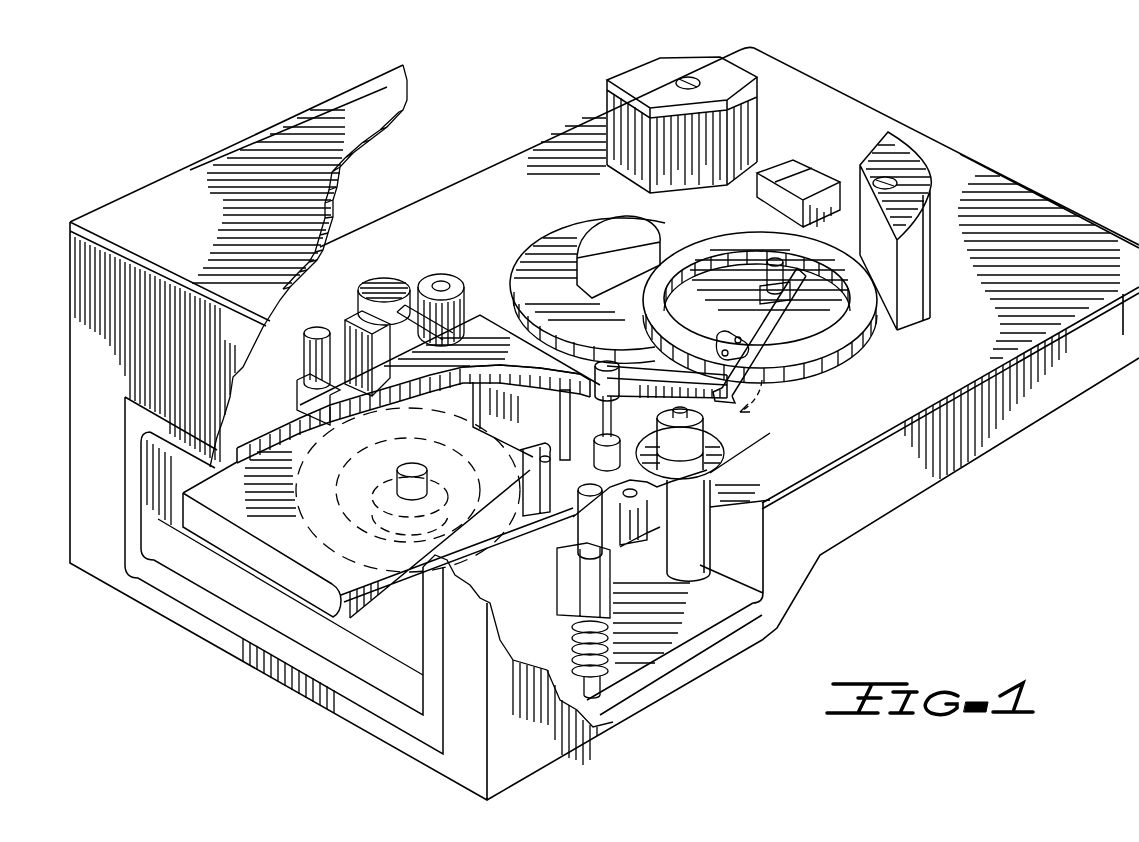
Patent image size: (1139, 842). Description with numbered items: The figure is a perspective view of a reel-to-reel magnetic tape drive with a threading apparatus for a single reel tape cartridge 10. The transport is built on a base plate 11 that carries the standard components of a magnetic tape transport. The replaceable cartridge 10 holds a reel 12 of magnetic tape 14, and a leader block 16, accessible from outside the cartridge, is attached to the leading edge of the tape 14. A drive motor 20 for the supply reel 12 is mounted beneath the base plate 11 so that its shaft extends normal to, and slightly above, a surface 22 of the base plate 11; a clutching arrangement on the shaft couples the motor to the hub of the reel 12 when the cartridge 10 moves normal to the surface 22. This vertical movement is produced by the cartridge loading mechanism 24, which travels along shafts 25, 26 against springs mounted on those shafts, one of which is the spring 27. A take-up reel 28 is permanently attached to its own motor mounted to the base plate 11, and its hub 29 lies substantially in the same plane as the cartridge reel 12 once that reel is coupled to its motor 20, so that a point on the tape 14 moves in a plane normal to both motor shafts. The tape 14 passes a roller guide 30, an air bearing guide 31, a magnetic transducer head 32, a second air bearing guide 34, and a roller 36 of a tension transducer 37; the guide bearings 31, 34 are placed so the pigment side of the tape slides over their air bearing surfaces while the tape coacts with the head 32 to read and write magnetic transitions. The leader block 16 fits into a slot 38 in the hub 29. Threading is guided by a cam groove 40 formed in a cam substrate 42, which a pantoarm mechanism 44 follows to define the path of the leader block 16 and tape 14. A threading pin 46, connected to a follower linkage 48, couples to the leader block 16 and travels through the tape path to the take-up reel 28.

The single reel tape cartridge 10 is at (317, 593).
The base plate 11 is at (902, 483).
The reel 12 is at (500, 476).
The magnetic tape 14 is at (538, 440).
The leader block 16 is at (556, 490).
The drive motor 20 is at (420, 612).
The surface 22 is at (977, 339).
The cartridge loading mechanism 24 is at (278, 435).
The shaft 25 is at (560, 527).
The shaft 26 is at (320, 328).
The spring 27 is at (608, 655).
The take-up reel 28 is at (535, 248).
The hub 29 is at (690, 246).
The roller guide 30 is at (715, 450).
The air bearing guide 31 is at (920, 182).
The magnetic transducer head 32 is at (802, 166).
The second air bearing guide 34 is at (627, 72).
The roller 36 is at (461, 282).
The tension transducer 37 is at (386, 284).
The slot 38 is at (612, 258).
The cam groove 40 is at (752, 250).
The cam substrate 42 is at (843, 348).
The pantoarm mechanism 44 is at (752, 422).
The threading pin 46 is at (640, 395).
The follower linkage 48 is at (500, 374).